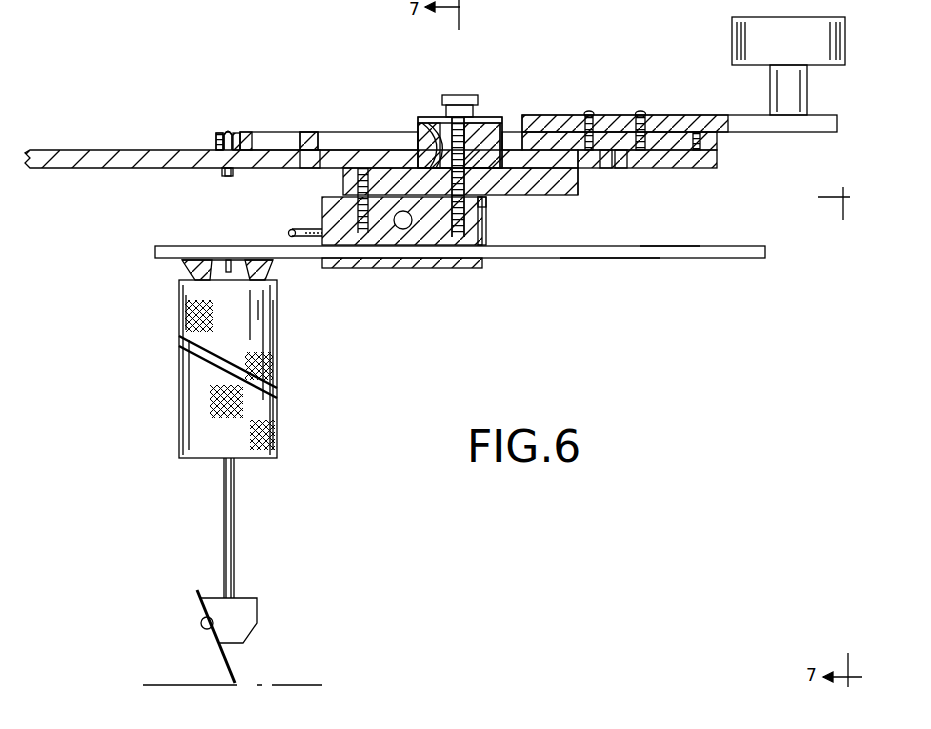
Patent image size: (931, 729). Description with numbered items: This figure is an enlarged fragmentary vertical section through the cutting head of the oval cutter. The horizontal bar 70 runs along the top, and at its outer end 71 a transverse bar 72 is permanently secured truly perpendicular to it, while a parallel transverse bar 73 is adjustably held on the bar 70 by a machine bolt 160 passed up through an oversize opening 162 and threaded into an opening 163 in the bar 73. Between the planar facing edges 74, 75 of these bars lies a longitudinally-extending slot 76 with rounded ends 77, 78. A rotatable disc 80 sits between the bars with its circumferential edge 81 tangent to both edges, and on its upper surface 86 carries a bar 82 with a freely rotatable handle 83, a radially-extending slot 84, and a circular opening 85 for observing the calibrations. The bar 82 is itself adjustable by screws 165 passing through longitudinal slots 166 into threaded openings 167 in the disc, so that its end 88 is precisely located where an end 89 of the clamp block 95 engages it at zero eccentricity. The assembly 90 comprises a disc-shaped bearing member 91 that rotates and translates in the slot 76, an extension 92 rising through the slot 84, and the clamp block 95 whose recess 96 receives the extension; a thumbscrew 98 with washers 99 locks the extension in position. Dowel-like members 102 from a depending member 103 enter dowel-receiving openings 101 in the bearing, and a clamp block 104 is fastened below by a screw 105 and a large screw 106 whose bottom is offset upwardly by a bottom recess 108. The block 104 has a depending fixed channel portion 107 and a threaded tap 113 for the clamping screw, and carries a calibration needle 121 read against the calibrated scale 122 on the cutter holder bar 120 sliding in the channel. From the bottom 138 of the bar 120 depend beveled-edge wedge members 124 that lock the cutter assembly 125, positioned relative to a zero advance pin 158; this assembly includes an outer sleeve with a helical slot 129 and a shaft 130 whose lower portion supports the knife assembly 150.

The horizontal bar 70 is at (82, 150).
The transverse bar 73 is at (217, 135).
The machine bolt 160 is at (226, 130).
The planar facing edge 75 is at (238, 131).
The oversize opening 162 is at (216, 138).
The threaded opening 163 is at (222, 170).
The circumferential edge 81 is at (243, 170).
The circular opening 85 is at (257, 131).
The upper surface 86 is at (305, 114).
The radially-extending slot 84 is at (328, 137).
The dowel-like member 102 is at (436, 150).
The dowel-receiving opening 101 is at (440, 157).
The clamp block 95 is at (427, 117).
The disc-shaped bearing member 91 is at (426, 120).
The washer 99 is at (450, 96).
The recess 96 is at (470, 113).
The thumbscrew 98 is at (478, 128).
The extension 92 is at (524, 97).
The assembly 90 is at (524, 82).
The end of clamp block 89 is at (505, 122).
The end of bar 88 is at (522, 118).
The screw 165 is at (589, 112).
The longitudinal slot 166 is at (641, 112).
The bar 82 is at (823, 115).
The handle 83 is at (800, 49).
The transverse bar 72 is at (718, 135).
The outer end 71 is at (718, 160).
The rounded end 77 is at (605, 157).
The threaded opening 167 is at (620, 157).
The planar facing edge 74 is at (697, 152).
The rotatable disc 80 is at (580, 182).
The depending member 103 is at (570, 173).
The screw 105 is at (358, 175).
The rounded end 78 is at (302, 170).
The longitudinally-extending slot 76 is at (307, 168).
The calibration needle 121 is at (291, 231).
The large screw 106 is at (470, 218).
The clamp block 104 is at (481, 224).
The bottom recess 108 is at (334, 243).
The threaded tap 113 is at (401, 229).
The depending fixed channel portion 107 is at (420, 268).
The calibrated scale 122 is at (698, 231).
The cutter holder bar 120 is at (628, 258).
The bottom of cutter bar 138 is at (652, 259).
The beveled-edge wedge member 124 is at (183, 265).
The zero advance pin 158 is at (222, 263).
The cutter assembly 125 is at (168, 368).
The helical slot 129 is at (277, 394).
The shaft 130 is at (234, 532).
The knife assembly 150 is at (186, 593).